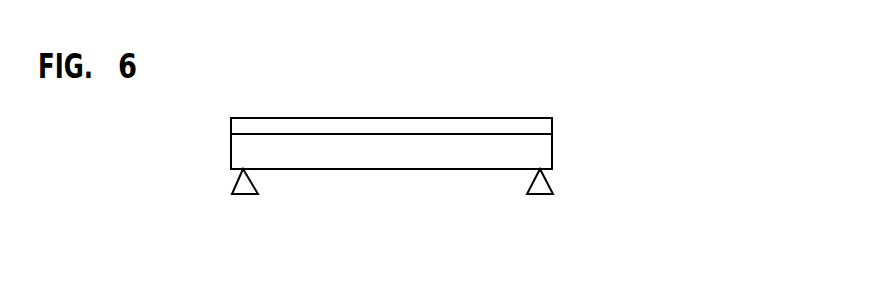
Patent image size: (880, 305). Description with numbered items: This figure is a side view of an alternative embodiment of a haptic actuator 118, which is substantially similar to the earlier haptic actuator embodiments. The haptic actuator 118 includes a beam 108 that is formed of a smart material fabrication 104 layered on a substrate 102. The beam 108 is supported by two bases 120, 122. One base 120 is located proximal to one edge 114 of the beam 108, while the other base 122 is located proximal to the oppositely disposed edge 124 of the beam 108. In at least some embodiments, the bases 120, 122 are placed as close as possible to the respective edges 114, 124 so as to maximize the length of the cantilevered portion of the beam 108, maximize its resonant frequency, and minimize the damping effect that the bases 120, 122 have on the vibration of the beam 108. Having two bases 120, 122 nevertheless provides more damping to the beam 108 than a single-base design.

The substrate 102 is at (392, 169).
The smart material fabrication 104 is at (552, 125).
The beam 108 is at (513, 118).
The edge 114 is at (231, 143).
The haptic actuator 118 is at (660, 80).
The base 120 is at (245, 195).
The base 122 is at (540, 195).
The edge 124 is at (552, 150).